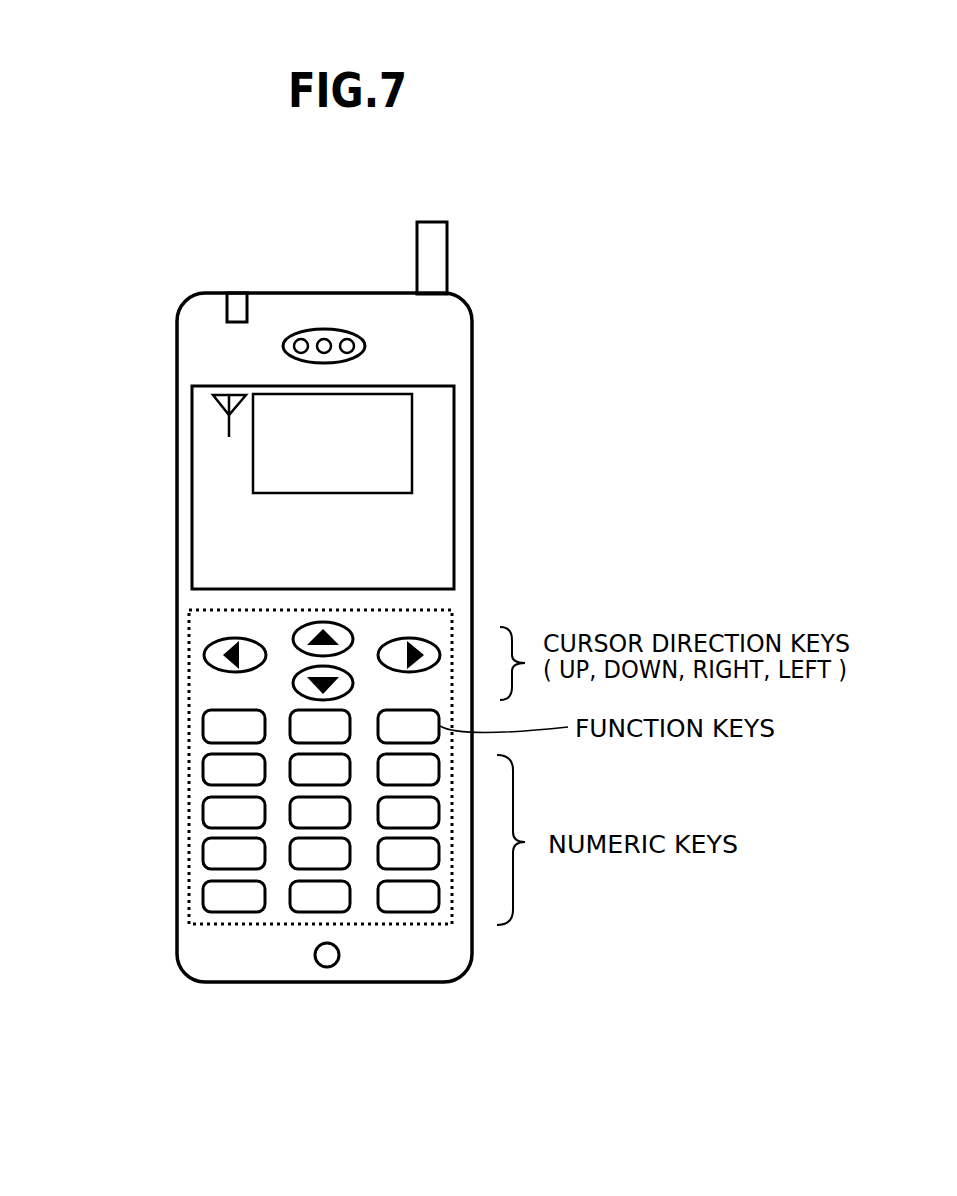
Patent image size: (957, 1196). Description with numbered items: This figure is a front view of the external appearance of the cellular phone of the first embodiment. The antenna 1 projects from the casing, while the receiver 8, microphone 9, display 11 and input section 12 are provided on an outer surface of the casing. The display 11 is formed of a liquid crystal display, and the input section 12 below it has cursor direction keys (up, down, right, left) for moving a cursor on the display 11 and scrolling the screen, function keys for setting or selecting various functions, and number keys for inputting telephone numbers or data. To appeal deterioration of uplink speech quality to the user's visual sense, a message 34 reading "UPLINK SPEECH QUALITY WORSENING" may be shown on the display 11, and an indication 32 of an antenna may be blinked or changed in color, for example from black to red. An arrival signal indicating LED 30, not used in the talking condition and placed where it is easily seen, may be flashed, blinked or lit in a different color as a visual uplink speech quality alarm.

The antenna 1 is at (447, 258).
The receiver 8 is at (326, 338).
The microphone 9 is at (327, 967).
The display 11 is at (210, 505).
The input section 12 is at (210, 633).
The arrival signal indicating LED 30 is at (235, 312).
The indication of an antenna 32 is at (229, 422).
The message 34 is at (412, 420).